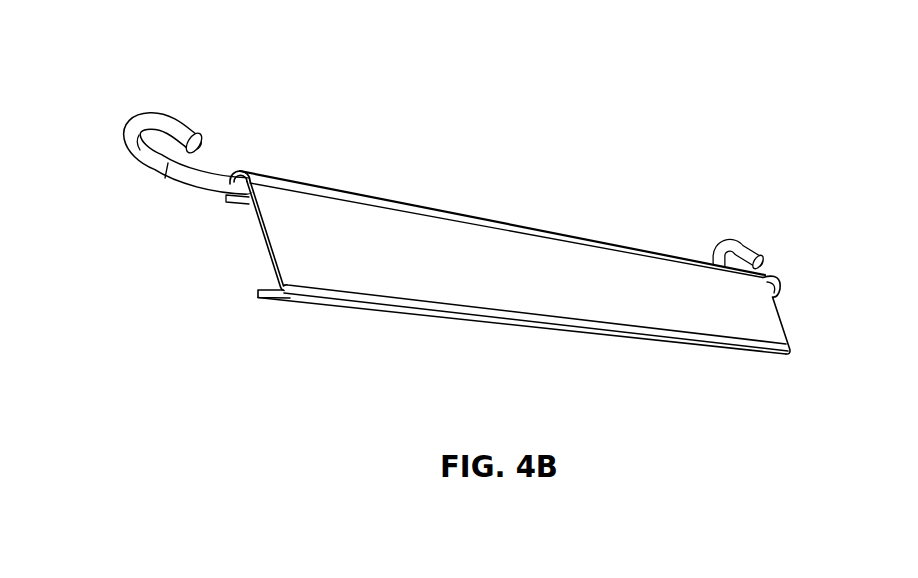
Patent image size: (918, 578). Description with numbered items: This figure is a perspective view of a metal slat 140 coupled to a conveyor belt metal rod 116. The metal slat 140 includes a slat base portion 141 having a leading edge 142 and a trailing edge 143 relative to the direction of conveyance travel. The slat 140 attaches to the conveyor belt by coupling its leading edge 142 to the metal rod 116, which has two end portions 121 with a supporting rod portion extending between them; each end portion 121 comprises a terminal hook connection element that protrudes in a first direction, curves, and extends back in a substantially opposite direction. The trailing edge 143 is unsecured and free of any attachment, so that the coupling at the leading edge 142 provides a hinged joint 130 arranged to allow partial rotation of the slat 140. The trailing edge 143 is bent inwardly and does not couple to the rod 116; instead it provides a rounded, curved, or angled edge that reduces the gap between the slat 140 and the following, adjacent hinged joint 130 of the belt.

The metal rod 116 is at (184, 194).
The end portion 121 is at (411, 169).
The hinged joint 130 is at (235, 161).
The metal slat 140 is at (505, 191).
The slat base portion 141 is at (768, 328).
The leading edge 142 is at (229, 203).
The trailing edge 143 is at (266, 299).